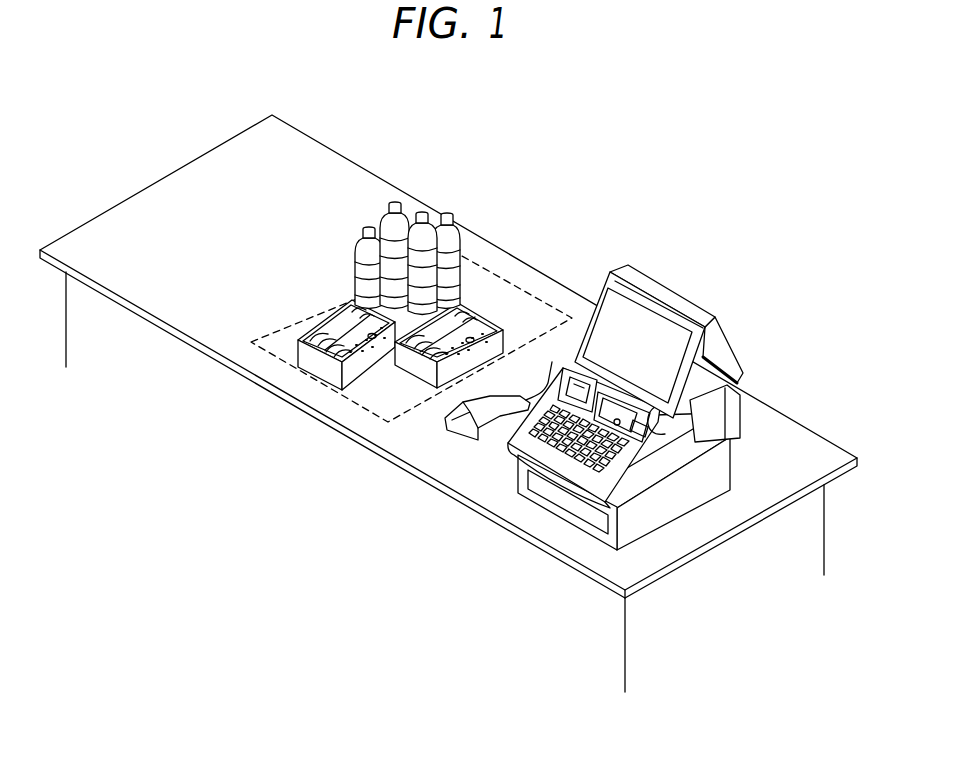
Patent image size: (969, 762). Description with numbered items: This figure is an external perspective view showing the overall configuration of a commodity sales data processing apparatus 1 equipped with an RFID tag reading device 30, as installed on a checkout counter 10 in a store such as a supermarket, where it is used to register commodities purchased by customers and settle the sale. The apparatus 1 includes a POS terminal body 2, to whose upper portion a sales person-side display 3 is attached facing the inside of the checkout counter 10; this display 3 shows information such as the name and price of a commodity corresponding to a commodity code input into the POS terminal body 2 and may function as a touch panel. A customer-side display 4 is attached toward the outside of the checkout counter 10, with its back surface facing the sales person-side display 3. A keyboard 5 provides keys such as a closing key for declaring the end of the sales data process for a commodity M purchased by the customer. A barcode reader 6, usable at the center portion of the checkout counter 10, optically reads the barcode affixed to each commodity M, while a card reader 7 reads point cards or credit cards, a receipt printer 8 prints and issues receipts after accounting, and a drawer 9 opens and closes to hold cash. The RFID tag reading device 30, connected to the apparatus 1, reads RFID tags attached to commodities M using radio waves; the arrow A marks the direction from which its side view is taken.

The commodity sales data processing apparatus 1 is at (609, 417).
The POS terminal body 2 is at (626, 489).
The sales person-side display 3 is at (615, 313).
The customer-side display 4 is at (659, 321).
The keyboard 5 is at (597, 447).
The barcode reader 6 is at (450, 433).
The card reader 7 is at (668, 442).
The receipt printer 8 is at (560, 380).
The drawer 9 is at (540, 492).
The checkout counter 10 is at (531, 522).
The RFID tag reading device 30 is at (377, 403).
The commodity M is at (450, 208).
The A arrow A is at (250, 520).